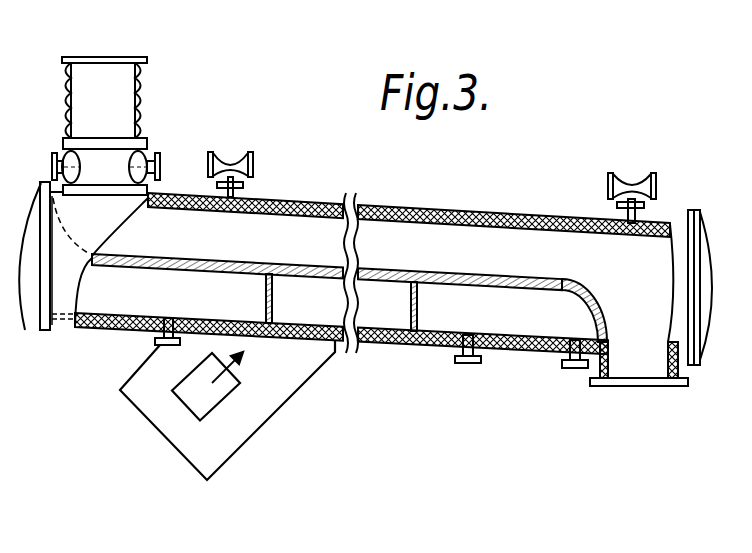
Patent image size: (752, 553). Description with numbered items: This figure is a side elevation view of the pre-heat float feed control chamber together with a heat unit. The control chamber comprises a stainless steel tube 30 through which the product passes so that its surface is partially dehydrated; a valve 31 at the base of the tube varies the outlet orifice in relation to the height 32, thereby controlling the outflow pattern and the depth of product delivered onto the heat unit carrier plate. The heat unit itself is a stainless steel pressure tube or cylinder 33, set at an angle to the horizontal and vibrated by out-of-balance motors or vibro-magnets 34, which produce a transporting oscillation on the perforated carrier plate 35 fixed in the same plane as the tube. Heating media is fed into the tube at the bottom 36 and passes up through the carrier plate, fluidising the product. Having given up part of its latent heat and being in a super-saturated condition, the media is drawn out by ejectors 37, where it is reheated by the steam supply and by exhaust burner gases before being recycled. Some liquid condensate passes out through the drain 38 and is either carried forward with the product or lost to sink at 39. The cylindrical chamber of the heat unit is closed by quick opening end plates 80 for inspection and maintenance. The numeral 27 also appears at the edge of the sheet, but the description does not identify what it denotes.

The frame (partial, cut off) 27 is at (673, 8).
The stainless steel tube 30 is at (120, 98).
The valve 31 is at (122, 163).
The height 32 is at (120, 240).
The stainless steel pressure tube or cylinder 33 is at (487, 209).
The out-of-balance motors or vibro-magnets 34 is at (210, 398).
The perforated carrier plate 35 is at (391, 280).
The bottom 36 is at (163, 342).
The ejectors 37 is at (237, 158).
The drain 38 is at (563, 372).
The sink 39 is at (578, 377).
The quick opening end plates 80 is at (25, 330).